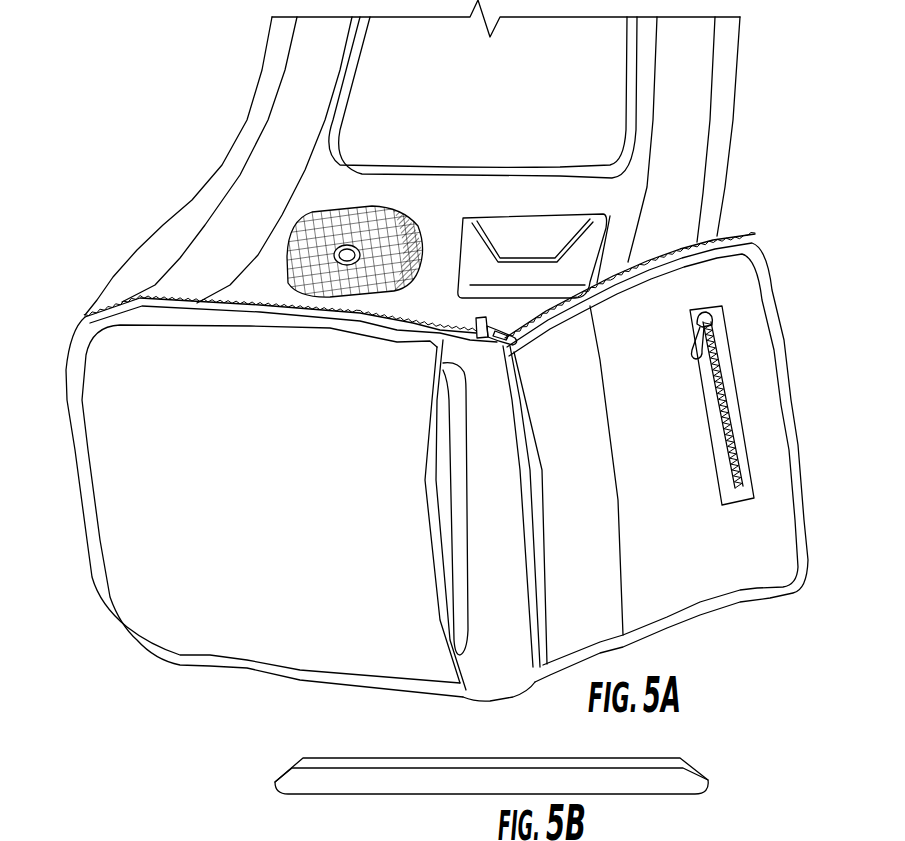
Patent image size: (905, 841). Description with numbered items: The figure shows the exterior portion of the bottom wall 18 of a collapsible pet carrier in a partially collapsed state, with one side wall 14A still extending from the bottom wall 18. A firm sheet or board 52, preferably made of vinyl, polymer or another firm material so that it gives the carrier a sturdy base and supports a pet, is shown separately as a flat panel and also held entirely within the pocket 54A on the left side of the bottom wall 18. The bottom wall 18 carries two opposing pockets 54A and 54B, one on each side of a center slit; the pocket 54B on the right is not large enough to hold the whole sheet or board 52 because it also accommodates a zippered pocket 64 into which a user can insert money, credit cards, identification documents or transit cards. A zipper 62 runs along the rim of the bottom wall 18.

In FIG. 5A, the side wall 14A is at (318, 188).
In FIG. 5A, the bottom wall 18 is at (107, 490).
In FIG. 5A, the sheet or board 52 is at (458, 498).
In FIG. 5B, the sheet or board 52 is at (687, 762).
In FIG. 5A, the pocket 54A is at (280, 486).
In FIG. 5A, the pocket 54B is at (666, 465).
In FIG. 5A, the pocket 64 is at (712, 397).
In FIG. 5B, the zipper 62 is at (715, 835).